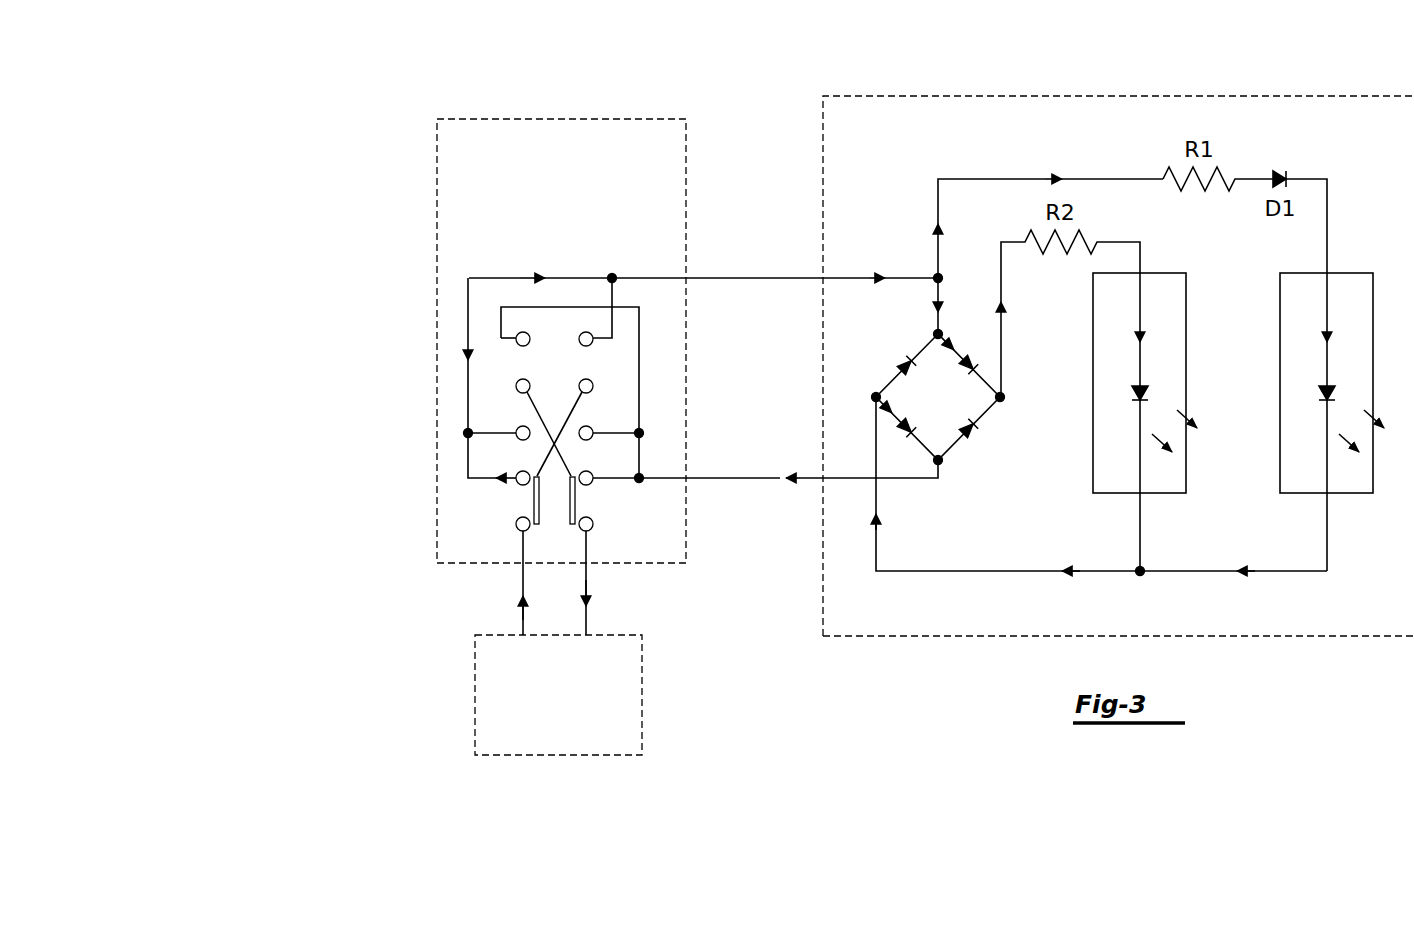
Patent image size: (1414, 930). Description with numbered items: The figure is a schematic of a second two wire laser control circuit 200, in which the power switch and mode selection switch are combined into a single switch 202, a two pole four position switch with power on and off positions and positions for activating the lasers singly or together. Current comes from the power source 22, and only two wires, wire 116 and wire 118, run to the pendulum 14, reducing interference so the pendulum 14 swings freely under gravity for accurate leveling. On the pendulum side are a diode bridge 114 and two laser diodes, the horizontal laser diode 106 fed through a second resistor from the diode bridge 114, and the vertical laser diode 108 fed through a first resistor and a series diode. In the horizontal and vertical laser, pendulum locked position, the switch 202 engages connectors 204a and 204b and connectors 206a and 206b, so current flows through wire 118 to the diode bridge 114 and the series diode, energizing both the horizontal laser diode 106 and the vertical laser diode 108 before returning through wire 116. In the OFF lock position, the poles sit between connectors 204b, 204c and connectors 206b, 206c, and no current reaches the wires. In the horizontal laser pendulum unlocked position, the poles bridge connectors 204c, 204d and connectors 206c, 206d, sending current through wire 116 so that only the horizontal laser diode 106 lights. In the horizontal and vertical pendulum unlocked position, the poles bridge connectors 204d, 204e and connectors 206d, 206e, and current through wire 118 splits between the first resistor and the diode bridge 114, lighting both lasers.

The two wire laser control circuit 200 is at (582, 72).
The switch 202 is at (653, 118).
The connector 204a is at (518, 528).
The connector 204b is at (519, 484).
The connector 204c is at (517, 438).
The connector 204d is at (516, 385).
The connector 204e is at (517, 342).
The connector 206a is at (590, 528).
The connector 206b is at (590, 484).
The connector 206c is at (592, 437).
The connector 206d is at (593, 386).
The connector 206e is at (592, 343).
The power source 22 is at (475, 694).
The wire 118 is at (735, 277).
The wire 116 is at (795, 477).
The pendulum 14 is at (1098, 96).
The diode bridge 114 is at (972, 478).
The horizontal laser diode 106 is at (1170, 273).
The vertical laser diode 108 is at (1357, 273).